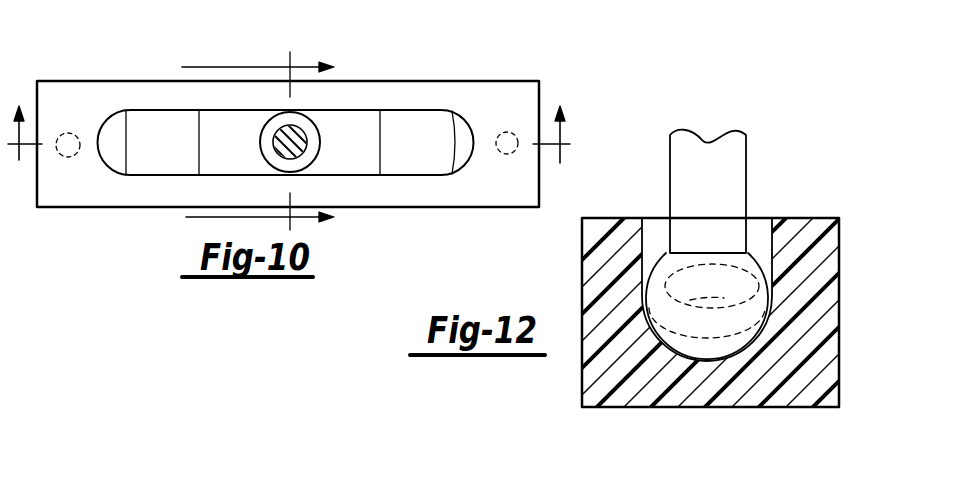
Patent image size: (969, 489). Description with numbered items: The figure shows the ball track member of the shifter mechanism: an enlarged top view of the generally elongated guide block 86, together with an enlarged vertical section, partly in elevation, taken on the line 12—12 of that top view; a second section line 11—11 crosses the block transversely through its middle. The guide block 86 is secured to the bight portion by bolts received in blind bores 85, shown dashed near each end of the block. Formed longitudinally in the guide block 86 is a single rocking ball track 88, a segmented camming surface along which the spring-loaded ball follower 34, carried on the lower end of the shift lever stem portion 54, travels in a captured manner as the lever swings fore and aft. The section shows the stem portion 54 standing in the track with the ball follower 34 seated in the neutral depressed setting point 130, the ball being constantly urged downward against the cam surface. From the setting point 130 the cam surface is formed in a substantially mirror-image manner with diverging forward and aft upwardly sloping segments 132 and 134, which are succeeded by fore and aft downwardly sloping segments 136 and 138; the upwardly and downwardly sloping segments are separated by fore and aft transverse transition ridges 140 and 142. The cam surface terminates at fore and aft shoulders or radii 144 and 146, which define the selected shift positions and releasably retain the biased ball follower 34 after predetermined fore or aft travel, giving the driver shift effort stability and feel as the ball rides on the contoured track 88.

In FIG. 10, the section line 11— 11 is at (289, 153).
In FIG. 10, the section line 12— 12 is at (241, 146).
In FIG. 10, the ball follower 34 is at (320, 135).
In FIG. 12, the ball follower 34 is at (757, 258).
In FIG. 10, the stem portion 54 is at (306, 108).
In FIG. 12, the stem portion 54 is at (746, 154).
In FIG. 10, the blind bores 85 is at (72, 130).
In FIG. 10, the guide block 86 is at (485, 71).
In FIG. 12, the guide block 86 is at (817, 210).
In FIG. 10, the ball track 88 is at (431, 122).
In FIG. 12, the ball track 88 is at (648, 234).
In FIG. 12, the neutral depressed setting point 130 is at (720, 315).
In FIG. 10, the forward upwardly sloping segment 132 is at (222, 153).
In FIG. 10, the aft upwardly sloping segment 134 is at (366, 157).
In FIG. 10, the fore downwardly sloping segment 136 is at (152, 155).
In FIG. 10, the aft downwardly sloping segment 138 is at (419, 155).
In FIG. 10, the fore transverse transition ridge 140 is at (197, 147).
In FIG. 12, the fore transverse transition ridge 140 is at (713, 310).
In FIG. 10, the aft transverse transition ridge 142 is at (382, 142).
In FIG. 12, the aft transverse transition ridge 142 is at (712, 283).
In FIG. 10, the fore shoulder 144 is at (114, 148).
In FIG. 10, the aft shoulder 146 is at (460, 147).